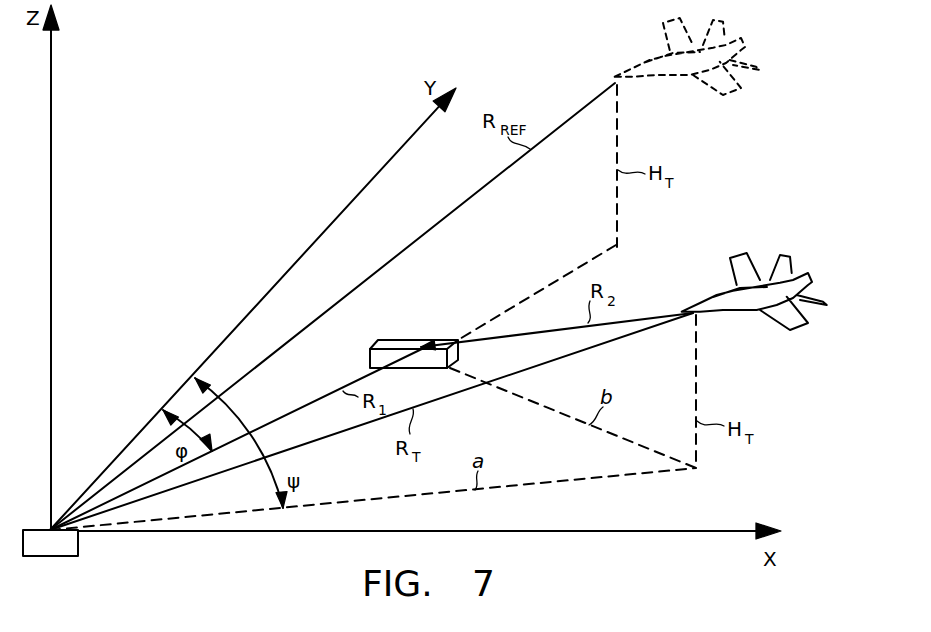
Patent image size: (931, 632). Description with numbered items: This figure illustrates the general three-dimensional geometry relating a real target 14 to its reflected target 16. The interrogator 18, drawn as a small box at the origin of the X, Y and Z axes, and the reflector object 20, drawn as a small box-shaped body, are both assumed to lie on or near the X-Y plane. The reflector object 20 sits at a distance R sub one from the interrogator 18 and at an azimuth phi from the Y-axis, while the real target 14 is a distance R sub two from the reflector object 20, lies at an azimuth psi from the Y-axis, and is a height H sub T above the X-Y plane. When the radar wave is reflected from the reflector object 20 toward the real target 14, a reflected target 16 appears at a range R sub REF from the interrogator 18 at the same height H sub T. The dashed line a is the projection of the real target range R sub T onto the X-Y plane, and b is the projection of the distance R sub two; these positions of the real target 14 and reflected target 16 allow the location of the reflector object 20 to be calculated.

The real target 14 is at (765, 234).
The reflected target 16 is at (594, 42).
The interrogator 18 is at (68, 556).
The reflector object 20 is at (370, 353).